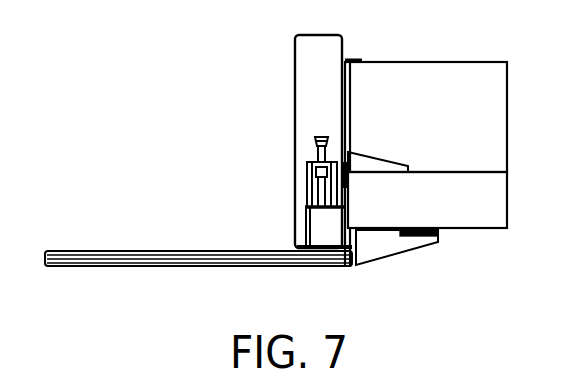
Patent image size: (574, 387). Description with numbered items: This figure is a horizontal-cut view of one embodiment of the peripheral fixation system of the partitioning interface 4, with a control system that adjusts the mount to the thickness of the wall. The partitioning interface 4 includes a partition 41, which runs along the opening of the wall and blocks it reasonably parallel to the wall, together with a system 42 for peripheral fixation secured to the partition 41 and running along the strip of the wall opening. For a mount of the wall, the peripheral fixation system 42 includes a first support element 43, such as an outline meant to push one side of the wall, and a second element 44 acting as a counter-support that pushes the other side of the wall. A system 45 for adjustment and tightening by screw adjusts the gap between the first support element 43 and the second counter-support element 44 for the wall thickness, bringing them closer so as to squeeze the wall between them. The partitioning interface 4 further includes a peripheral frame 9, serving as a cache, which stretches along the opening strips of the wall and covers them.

The peripheral frame 9 is at (295, 53).
The system for adjustment and/or tightening 45 is at (292, 142).
The second element of counter-support 44 is at (380, 168).
The first support element 43 is at (407, 243).
The system for peripheral fixation 42 is at (398, 284).
The partitioning interface 4 is at (198, 291).
The partition 41 is at (160, 260).